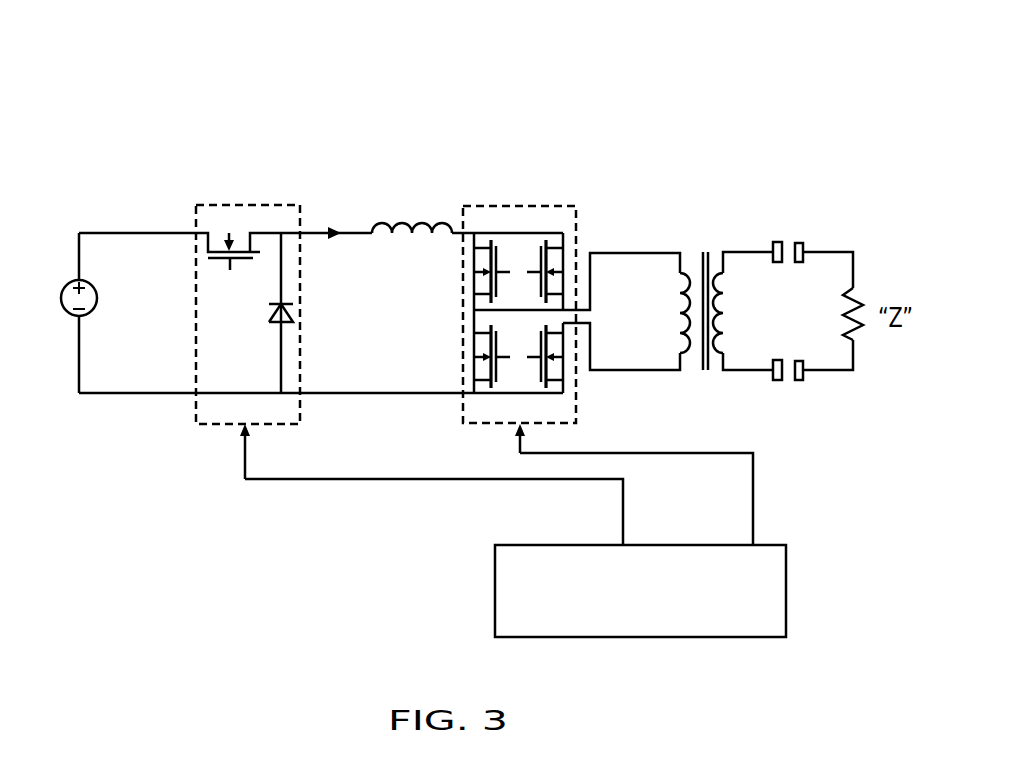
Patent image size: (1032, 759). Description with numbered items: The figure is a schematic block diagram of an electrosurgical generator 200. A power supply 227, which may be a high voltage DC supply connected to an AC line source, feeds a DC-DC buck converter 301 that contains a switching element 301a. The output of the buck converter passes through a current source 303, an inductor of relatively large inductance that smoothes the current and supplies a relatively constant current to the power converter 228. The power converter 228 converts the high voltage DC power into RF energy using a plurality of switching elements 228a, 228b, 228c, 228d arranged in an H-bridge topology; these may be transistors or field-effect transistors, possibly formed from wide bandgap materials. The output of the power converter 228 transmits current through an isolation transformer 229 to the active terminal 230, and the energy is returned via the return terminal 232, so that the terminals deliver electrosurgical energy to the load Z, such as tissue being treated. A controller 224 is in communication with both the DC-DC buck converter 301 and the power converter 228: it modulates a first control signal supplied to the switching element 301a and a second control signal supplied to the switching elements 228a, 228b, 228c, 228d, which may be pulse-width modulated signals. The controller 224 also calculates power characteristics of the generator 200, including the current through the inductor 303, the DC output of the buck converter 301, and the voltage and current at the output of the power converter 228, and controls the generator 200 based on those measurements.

The generator 200 is at (120, 137).
The power supply 227 is at (75, 281).
The DC-DC buck converter 301 is at (262, 136).
The switching element 301a is at (258, 255).
The current source 303 is at (378, 228).
The power converter 228 is at (480, 205).
The switching element 228a is at (472, 300).
The switching element 228b is at (472, 368).
The switching element 228c is at (565, 277).
The switching element 228d is at (565, 387).
The isolation transformer 229 is at (708, 250).
The active terminal 230 is at (778, 241).
The return terminal 232 is at (775, 360).
The controller 224 is at (777, 543).